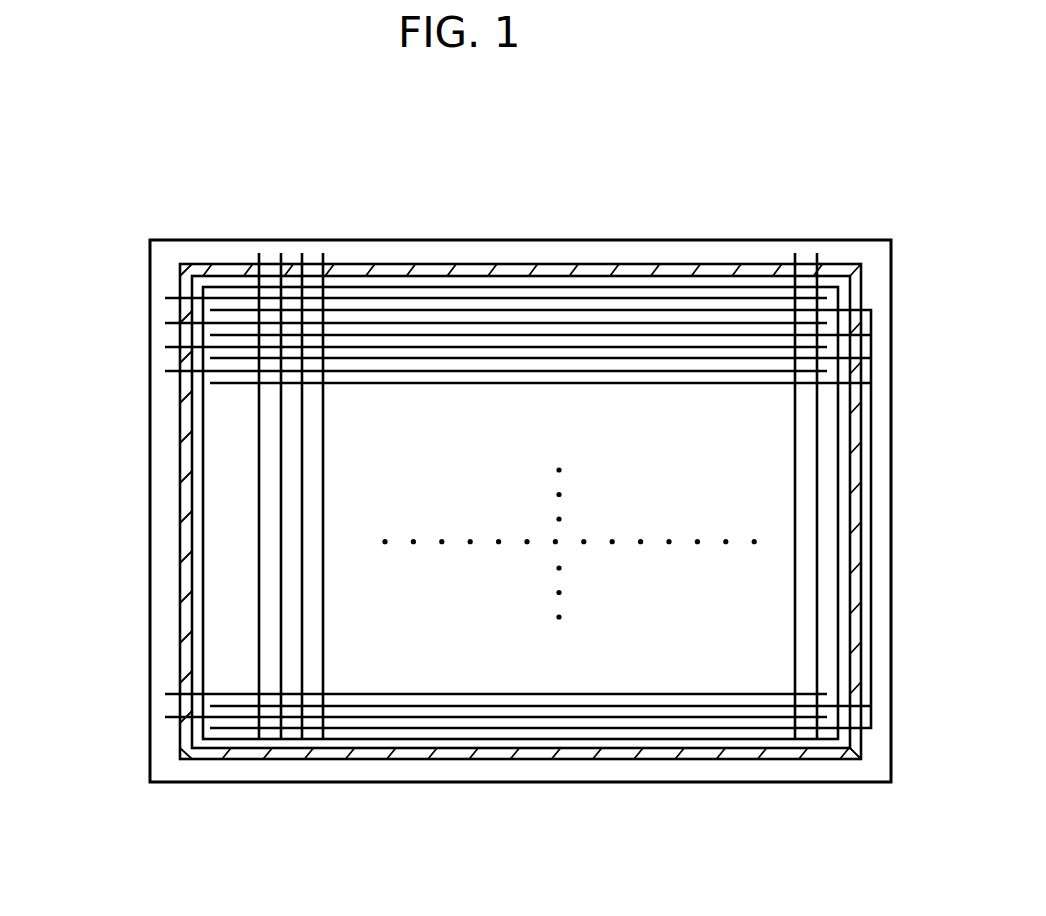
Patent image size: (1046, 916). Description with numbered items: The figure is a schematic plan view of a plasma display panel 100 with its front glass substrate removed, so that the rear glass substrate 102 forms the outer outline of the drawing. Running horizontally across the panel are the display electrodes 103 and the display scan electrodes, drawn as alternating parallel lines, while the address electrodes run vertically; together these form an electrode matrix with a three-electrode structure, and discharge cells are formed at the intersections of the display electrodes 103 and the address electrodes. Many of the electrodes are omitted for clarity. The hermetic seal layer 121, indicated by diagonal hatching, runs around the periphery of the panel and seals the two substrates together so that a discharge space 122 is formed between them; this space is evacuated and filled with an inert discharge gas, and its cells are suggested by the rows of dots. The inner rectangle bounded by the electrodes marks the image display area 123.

The plasma display panel 100 is at (892, 542).
The rear glass substrate 102 is at (851, 239).
The display electrodes 103 is at (222, 383).
The hermetic seal layer 121 is at (506, 268).
The discharge space 122 is at (612, 418).
The image display area 123 is at (203, 525).